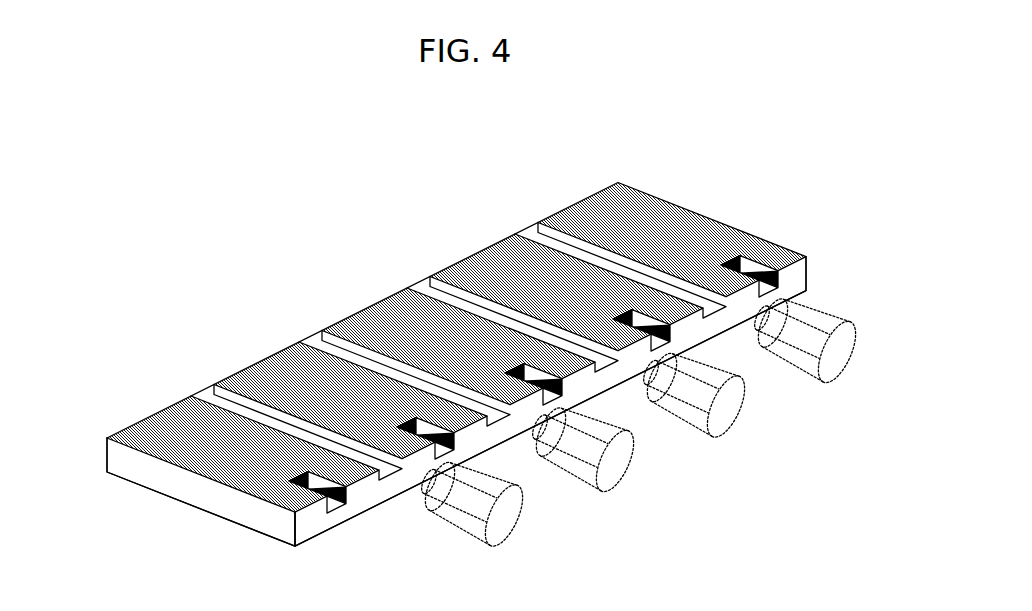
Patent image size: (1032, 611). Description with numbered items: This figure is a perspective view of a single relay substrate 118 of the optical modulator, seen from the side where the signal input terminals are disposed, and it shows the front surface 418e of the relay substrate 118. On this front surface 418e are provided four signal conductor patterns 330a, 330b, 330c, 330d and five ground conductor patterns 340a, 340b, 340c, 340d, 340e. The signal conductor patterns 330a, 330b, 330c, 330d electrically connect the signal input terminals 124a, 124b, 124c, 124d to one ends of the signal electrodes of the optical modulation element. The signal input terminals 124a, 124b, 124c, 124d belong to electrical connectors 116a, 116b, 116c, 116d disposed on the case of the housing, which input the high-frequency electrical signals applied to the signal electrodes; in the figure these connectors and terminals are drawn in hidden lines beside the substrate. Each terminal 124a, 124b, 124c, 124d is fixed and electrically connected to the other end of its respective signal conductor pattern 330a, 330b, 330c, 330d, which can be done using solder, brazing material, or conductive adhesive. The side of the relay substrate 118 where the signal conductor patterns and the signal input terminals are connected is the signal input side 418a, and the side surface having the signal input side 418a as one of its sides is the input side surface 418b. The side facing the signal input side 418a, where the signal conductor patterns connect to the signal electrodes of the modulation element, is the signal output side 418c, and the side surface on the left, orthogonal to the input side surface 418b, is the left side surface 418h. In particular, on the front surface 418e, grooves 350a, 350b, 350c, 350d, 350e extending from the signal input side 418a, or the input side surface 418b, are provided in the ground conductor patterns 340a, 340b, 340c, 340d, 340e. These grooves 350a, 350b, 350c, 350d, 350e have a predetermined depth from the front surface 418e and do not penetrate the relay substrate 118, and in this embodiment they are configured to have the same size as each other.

The relay substrate 118 is at (150, 219).
The signal conductor pattern 330a is at (540, 235).
The signal conductor pattern 330b is at (425, 268).
The signal conductor pattern 330c is at (318, 336).
The signal conductor pattern 330d is at (207, 380).
The ground conductor pattern 340a is at (588, 210).
The ground conductor pattern 340b is at (476, 260).
The ground conductor pattern 340c is at (367, 317).
The ground conductor pattern 340d is at (268, 365).
The ground conductor pattern 340e is at (167, 407).
The groove 350a is at (782, 278).
The groove 350b is at (673, 335).
The groove 350c is at (565, 389).
The groove 350d is at (456, 444).
The groove 350e is at (348, 498).
The electrical connector 116a is at (853, 344).
The electrical connector 116b is at (742, 424).
The electrical connector 116c is at (632, 478).
The electrical connector 116d is at (522, 534).
The signal input terminal 124a is at (797, 340).
The signal input terminal 124b is at (703, 397).
The signal input terminal 124c is at (592, 466).
The signal input terminal 124d is at (482, 518).
The signal input side 418a is at (268, 495).
The input side surface 418b is at (322, 522).
The signal output side 418c is at (138, 428).
The front surface 418e is at (686, 233).
The left side surface 418h is at (155, 476).